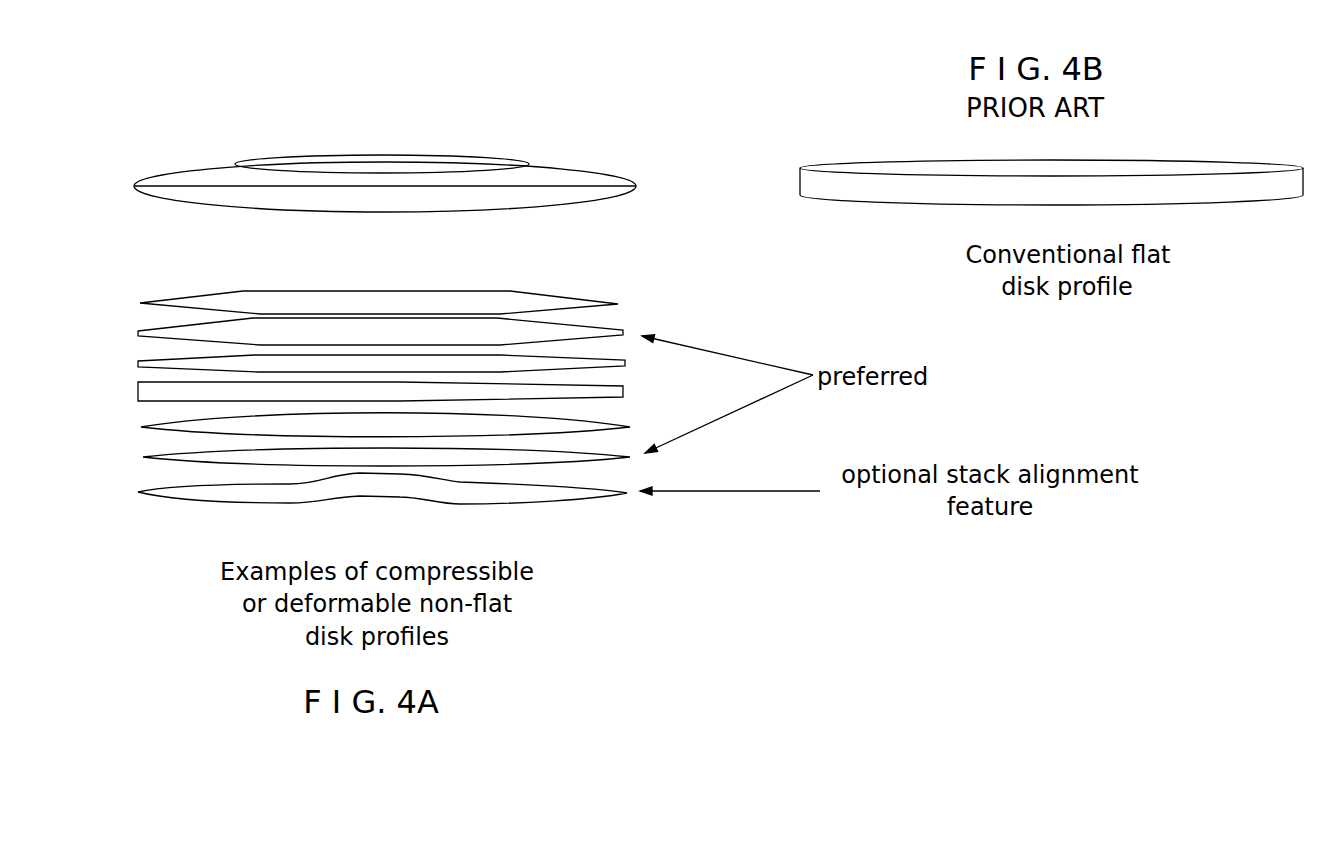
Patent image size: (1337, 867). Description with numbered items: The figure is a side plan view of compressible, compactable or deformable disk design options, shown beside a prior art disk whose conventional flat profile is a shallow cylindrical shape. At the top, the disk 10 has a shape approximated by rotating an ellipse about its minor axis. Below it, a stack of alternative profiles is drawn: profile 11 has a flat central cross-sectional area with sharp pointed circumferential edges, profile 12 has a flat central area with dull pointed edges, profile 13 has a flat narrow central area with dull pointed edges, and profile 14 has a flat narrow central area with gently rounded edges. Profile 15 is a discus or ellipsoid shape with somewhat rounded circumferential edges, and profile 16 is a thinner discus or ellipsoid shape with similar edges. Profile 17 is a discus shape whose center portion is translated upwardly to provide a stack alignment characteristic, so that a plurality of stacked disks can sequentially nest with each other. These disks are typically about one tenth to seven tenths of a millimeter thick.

The disk 10 is at (613, 166).
The disk profile 11 is at (592, 296).
The disk profile 12 is at (615, 327).
The disk profile 13 is at (627, 364).
The disk profile 14 is at (623, 391).
The disk profile 15 is at (633, 426).
The disk profile 16 is at (617, 460).
The disk profile 17 is at (607, 499).